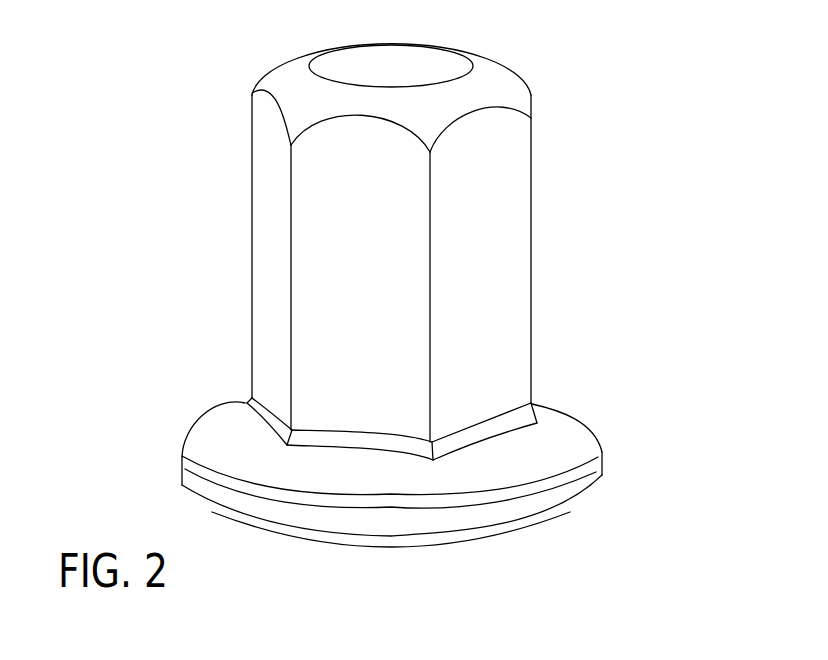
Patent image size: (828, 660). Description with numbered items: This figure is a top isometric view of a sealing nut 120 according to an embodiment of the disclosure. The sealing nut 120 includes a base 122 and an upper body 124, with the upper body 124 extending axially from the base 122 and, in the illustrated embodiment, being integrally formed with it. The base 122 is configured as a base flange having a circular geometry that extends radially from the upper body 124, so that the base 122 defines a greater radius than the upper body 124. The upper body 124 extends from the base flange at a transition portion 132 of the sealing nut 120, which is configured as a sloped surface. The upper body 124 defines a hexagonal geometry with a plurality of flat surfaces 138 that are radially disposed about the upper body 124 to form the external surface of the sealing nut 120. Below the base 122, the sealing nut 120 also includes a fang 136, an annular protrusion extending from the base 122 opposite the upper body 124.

The sealing nut 120 is at (278, 42).
The upper body 124 is at (531, 271).
The flat surfaces 138 is at (340, 203).
The base 122 is at (593, 480).
The transition portion 132 is at (230, 436).
The fang 136 is at (390, 541).